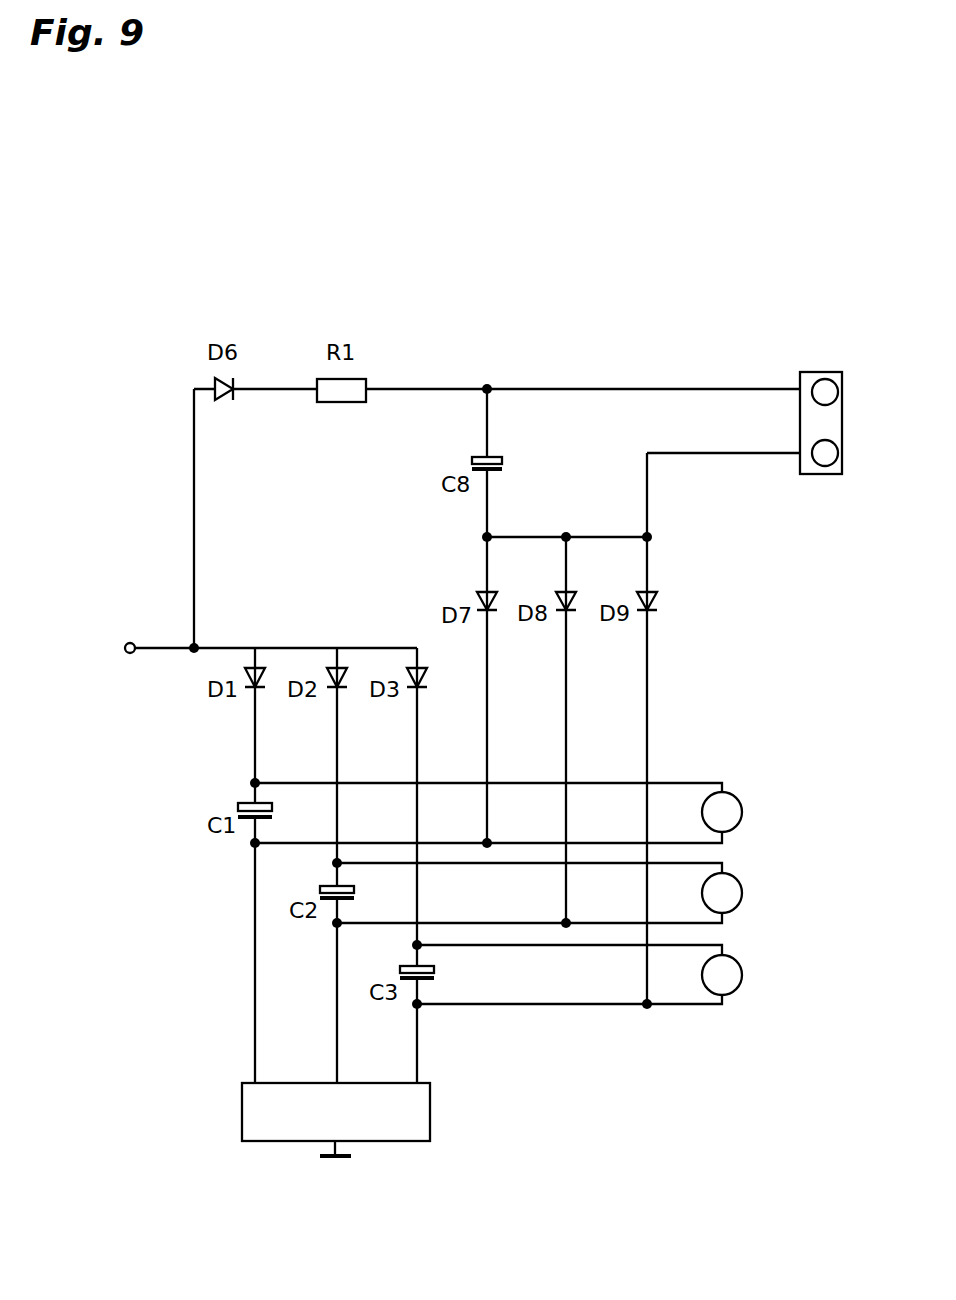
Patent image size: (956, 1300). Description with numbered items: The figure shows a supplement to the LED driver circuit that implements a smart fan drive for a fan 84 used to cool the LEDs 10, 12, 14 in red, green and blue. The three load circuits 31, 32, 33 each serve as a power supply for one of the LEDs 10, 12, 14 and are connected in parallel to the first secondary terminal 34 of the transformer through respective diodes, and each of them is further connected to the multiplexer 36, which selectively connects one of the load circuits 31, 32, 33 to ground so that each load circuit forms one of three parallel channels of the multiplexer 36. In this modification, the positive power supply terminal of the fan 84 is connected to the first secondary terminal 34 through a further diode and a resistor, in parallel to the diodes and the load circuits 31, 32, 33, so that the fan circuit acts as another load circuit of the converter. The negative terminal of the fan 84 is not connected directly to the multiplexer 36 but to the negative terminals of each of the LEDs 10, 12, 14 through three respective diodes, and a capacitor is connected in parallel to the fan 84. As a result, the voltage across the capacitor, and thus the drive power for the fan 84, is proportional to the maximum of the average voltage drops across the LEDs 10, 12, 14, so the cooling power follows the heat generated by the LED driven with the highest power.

The fan 84 is at (820, 372).
The first secondary terminal 34 is at (131, 631).
The load circuit 31 is at (364, 782).
The load circuit 32 is at (370, 925).
The load circuit 33 is at (698, 1006).
The multiplexer 36 is at (242, 1112).
The LED 10 is at (724, 794).
The LED 12 is at (733, 904).
The LED 14 is at (733, 986).